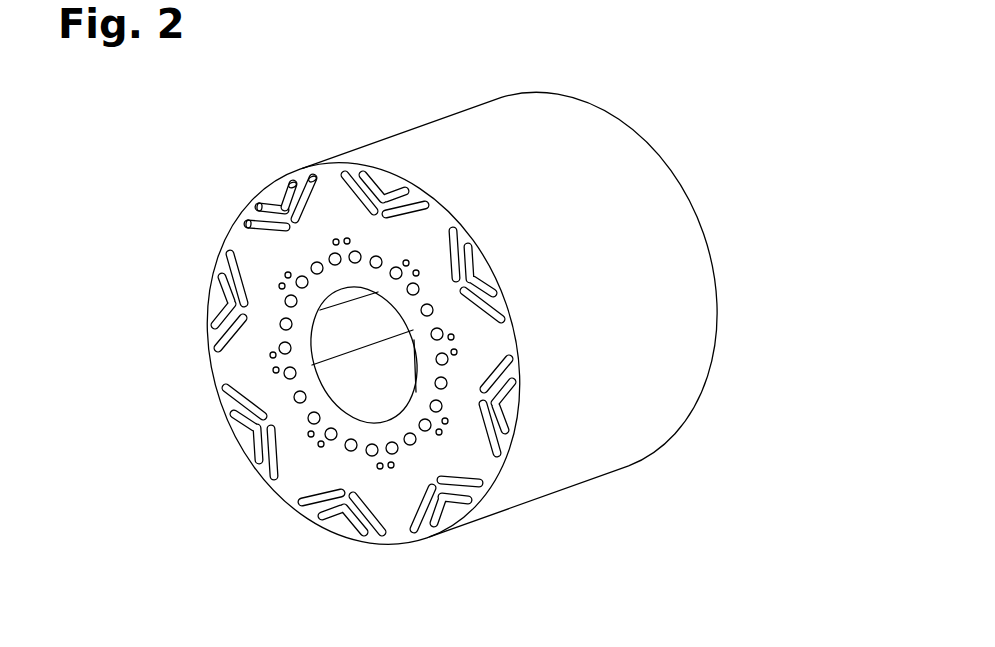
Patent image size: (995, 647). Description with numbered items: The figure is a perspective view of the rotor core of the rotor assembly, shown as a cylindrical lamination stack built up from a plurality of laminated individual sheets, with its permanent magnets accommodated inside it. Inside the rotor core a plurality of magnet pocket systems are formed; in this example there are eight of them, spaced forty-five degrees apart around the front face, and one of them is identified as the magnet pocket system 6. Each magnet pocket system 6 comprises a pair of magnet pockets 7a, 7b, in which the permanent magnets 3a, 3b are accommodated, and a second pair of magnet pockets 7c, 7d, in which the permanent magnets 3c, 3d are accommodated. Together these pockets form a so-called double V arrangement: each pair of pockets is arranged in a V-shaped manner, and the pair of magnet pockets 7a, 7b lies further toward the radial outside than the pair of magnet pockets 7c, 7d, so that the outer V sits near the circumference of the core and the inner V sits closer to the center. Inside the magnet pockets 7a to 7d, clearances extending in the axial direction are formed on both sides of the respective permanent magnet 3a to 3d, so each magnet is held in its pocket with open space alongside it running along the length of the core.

The magnet pocket system 6 is at (305, 243).
The permanent magnet 3a is at (268, 206).
The permanent magnet 3b is at (287, 188).
The permanent magnet 3c is at (250, 218).
The permanent magnet 3d is at (307, 172).
The magnet pocket 7a is at (256, 206).
The magnet pocket 7b is at (291, 180).
The magnet pocket 7c is at (246, 225).
The magnet pocket 7d is at (318, 174).